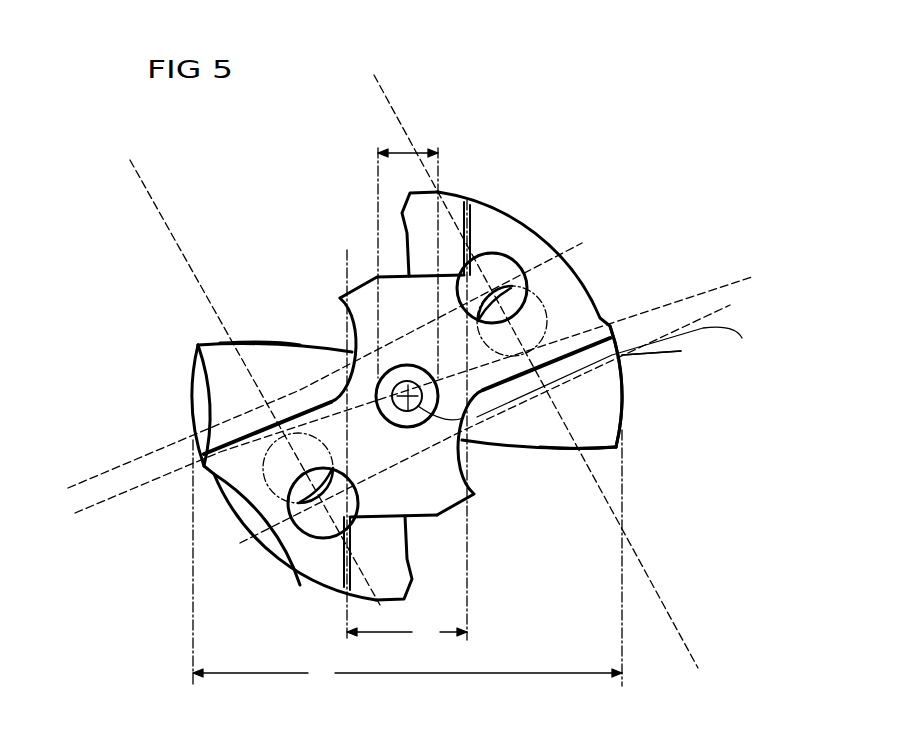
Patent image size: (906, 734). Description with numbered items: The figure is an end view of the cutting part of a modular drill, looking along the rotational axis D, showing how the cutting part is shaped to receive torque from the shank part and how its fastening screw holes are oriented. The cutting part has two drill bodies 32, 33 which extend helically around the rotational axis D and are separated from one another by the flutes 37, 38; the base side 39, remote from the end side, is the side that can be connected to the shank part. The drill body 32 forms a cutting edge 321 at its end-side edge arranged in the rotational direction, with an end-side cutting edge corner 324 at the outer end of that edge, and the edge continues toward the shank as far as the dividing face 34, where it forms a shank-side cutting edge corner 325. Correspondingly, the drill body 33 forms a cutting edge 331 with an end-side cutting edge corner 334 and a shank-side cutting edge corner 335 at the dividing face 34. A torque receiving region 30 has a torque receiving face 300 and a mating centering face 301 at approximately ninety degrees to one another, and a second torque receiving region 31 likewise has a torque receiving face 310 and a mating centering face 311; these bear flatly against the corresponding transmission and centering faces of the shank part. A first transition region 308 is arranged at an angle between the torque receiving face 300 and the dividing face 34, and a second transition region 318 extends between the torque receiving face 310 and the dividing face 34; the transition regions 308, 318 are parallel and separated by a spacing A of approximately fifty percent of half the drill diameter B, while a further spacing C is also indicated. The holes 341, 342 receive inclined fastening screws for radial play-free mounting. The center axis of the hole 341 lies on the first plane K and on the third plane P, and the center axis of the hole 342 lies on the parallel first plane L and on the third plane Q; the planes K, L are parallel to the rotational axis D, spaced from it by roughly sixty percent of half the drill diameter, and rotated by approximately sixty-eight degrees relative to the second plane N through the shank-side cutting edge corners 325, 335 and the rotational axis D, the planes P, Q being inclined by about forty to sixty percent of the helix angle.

The torque receiving region 30 is at (408, 365).
The torque receiving face 300 is at (447, 195).
The mating centering face 301 is at (367, 277).
The first transition region 308 is at (470, 228).
The torque receiving region 31 is at (463, 557).
The torque receiving face 310 is at (387, 560).
The mating centering face 311 is at (447, 510).
The second transition region 318 is at (347, 550).
The drill body 32 is at (557, 312).
The cutting edge 321 is at (547, 452).
The end-side cutting edge corner 324 is at (615, 450).
The shank-side cutting edge corner 325 is at (626, 372).
The drill body 33 is at (247, 473).
The cutting edge 331 is at (242, 343).
The end-side cutting edge corner 334 is at (200, 343).
The shank-side cutting edge corner 335 is at (197, 452).
The dividing face 34 is at (283, 497).
The hole 341 is at (507, 272).
The hole 342 is at (290, 470).
The flute 37 is at (483, 447).
The flute 38 is at (345, 343).
The base side 39 is at (577, 337).
The spacing A is at (407, 635).
The drill diameter B is at (407, 675).
The spacing C is at (400, 153).
The rotational axis D is at (661, 353).
The first plane K is at (386, 98).
The first plane L is at (155, 204).
The second plane N is at (116, 470).
The third plane P is at (118, 503).
The third plane Q is at (704, 296).